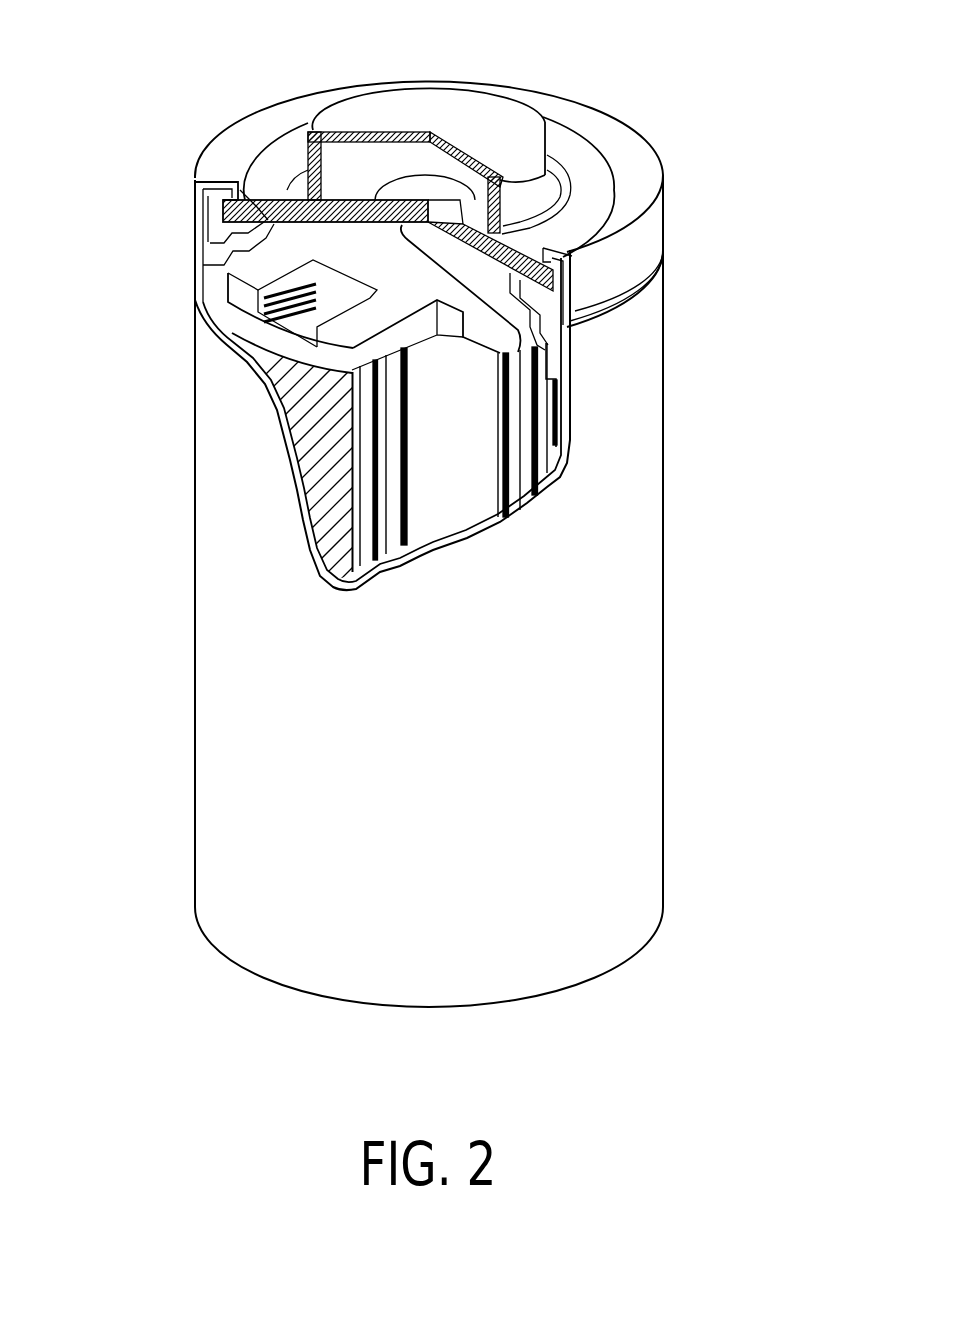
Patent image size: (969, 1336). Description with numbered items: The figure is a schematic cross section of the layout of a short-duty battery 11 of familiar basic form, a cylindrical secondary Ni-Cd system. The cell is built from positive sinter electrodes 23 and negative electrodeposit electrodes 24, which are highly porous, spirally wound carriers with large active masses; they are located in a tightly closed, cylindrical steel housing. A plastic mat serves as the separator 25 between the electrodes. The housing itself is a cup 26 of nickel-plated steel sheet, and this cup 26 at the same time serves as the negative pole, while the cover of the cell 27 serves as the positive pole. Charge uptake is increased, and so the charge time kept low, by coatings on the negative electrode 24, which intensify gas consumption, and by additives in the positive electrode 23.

The short-duty battery 11 is at (740, 170).
The positive sinter electrode 23 is at (315, 543).
The negative electrodeposit electrode 24 is at (352, 447).
The separator 25 is at (380, 492).
The cup 26 is at (246, 727).
The cover of the cell 27 is at (473, 118).